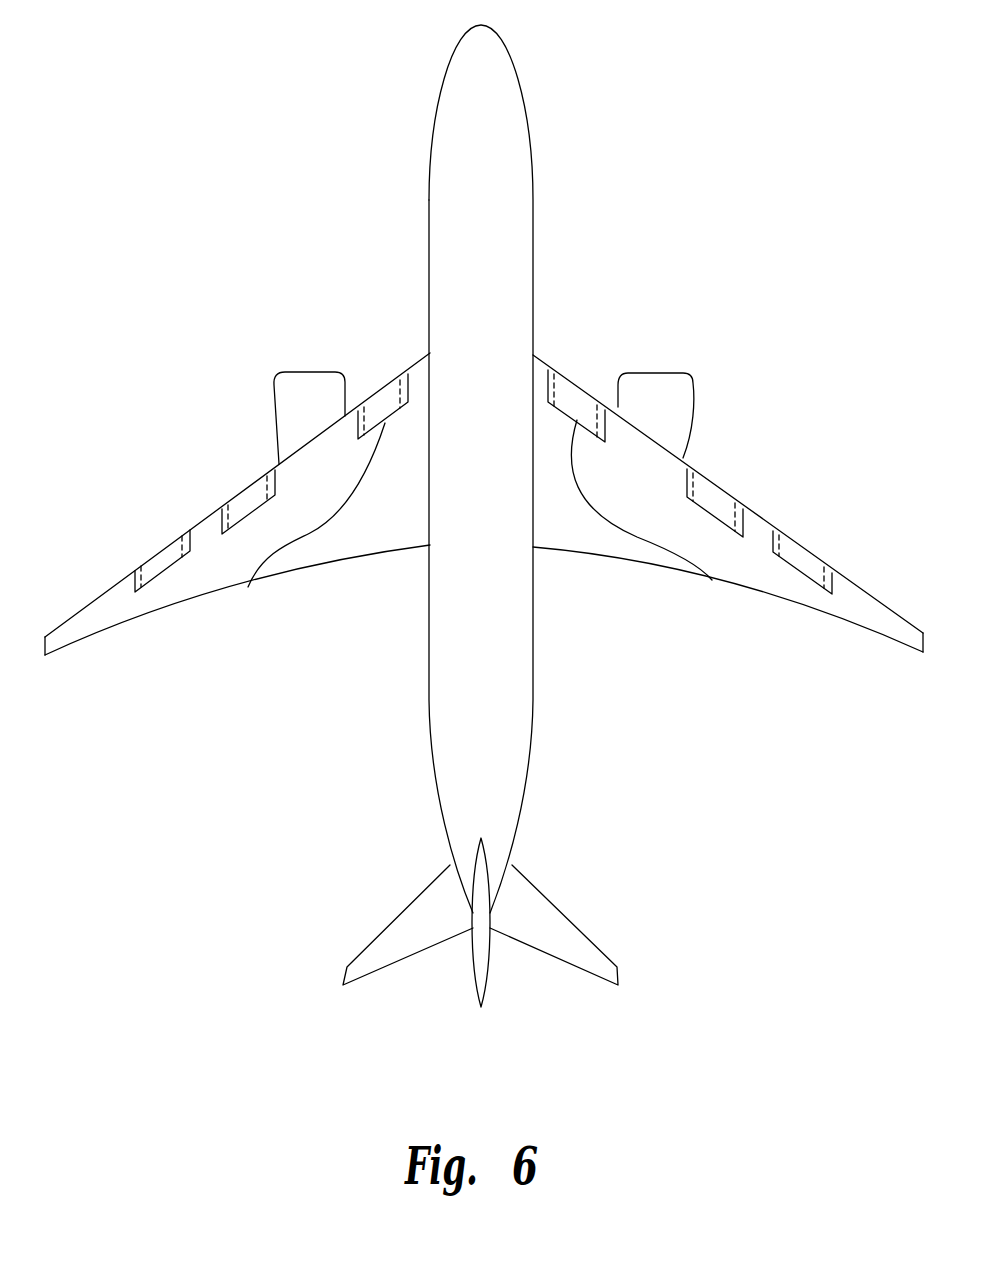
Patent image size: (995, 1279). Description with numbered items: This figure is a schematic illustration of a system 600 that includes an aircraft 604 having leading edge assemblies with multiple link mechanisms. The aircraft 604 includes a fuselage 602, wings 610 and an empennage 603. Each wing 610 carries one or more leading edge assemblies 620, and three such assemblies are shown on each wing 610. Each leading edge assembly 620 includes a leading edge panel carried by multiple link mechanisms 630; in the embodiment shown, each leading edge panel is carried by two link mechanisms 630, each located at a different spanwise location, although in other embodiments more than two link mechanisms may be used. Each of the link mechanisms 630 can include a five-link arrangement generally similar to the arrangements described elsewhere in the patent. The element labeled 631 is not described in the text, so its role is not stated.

The system 600 is at (717, 176).
The fuselage 602 is at (535, 247).
The empennage 603 is at (543, 847).
The aircraft 604 is at (378, 268).
The wing 610 is at (352, 557).
The leading edge assembly 620 is at (253, 518).
The link mechanism 630 is at (272, 480).
The outboard leading edge slat 631 is at (140, 580).